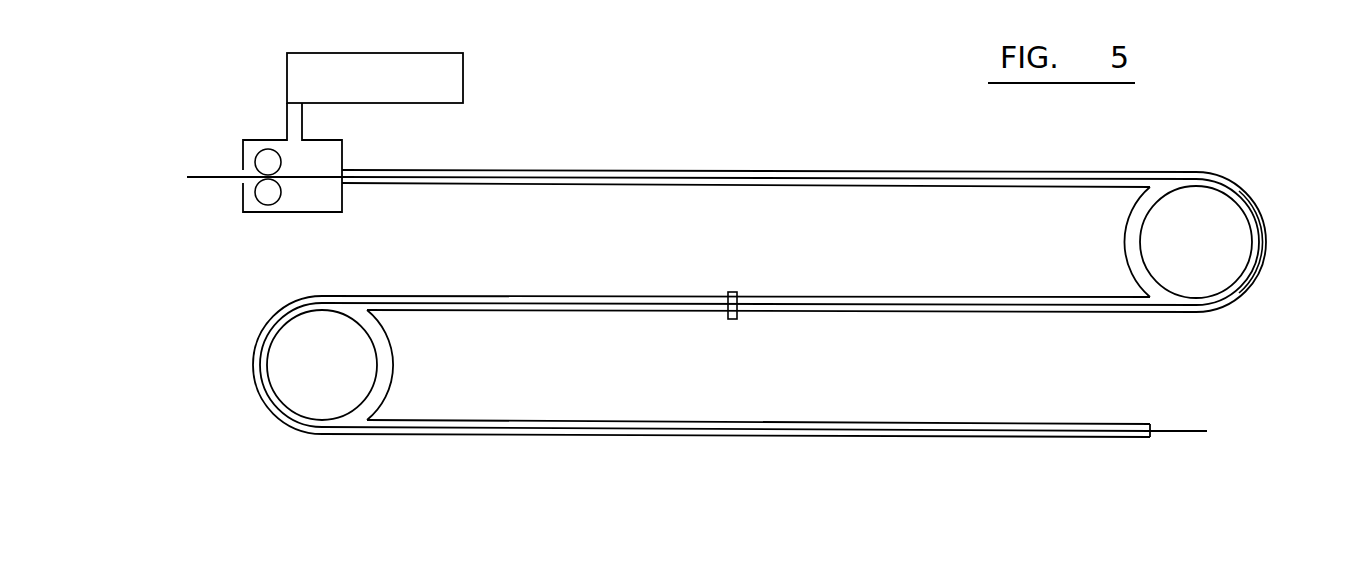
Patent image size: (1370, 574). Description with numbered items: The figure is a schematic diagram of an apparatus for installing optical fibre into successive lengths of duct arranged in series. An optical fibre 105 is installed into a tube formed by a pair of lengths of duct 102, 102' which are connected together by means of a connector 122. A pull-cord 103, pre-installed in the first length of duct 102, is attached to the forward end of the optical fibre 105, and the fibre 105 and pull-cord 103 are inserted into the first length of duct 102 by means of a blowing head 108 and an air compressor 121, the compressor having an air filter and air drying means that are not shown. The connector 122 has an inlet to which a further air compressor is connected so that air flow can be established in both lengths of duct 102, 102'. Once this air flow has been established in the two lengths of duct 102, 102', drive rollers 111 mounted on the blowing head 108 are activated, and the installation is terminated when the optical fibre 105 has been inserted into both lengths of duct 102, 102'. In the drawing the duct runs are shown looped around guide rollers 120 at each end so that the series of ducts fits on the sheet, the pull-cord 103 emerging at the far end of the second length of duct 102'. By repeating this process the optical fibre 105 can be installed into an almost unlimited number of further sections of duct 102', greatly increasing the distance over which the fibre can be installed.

The first length of duct 102 is at (769, 121).
The second length of duct 102' is at (759, 339).
The pull-cord 103 is at (1183, 432).
The optical fibre 105 is at (210, 177).
The blowing head 108 is at (257, 138).
The drive rollers 111 is at (265, 193).
The guide roller 120 is at (1257, 228).
The air compressor 121 is at (448, 82).
The connector 122 is at (737, 312).